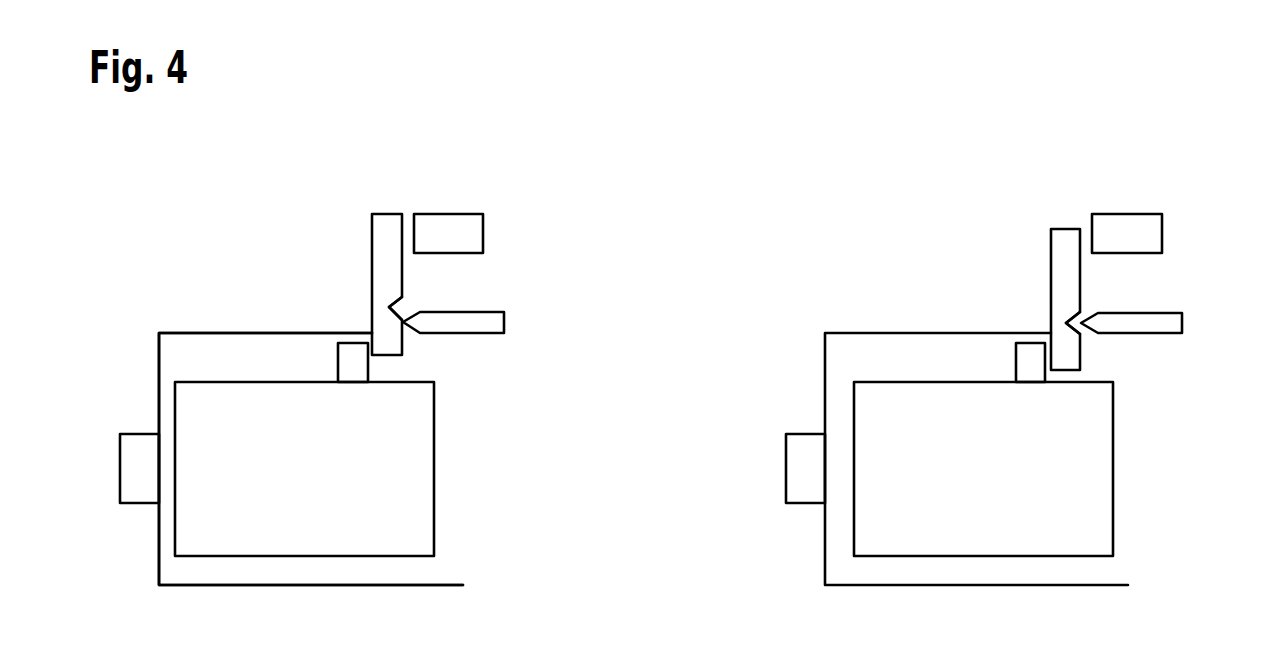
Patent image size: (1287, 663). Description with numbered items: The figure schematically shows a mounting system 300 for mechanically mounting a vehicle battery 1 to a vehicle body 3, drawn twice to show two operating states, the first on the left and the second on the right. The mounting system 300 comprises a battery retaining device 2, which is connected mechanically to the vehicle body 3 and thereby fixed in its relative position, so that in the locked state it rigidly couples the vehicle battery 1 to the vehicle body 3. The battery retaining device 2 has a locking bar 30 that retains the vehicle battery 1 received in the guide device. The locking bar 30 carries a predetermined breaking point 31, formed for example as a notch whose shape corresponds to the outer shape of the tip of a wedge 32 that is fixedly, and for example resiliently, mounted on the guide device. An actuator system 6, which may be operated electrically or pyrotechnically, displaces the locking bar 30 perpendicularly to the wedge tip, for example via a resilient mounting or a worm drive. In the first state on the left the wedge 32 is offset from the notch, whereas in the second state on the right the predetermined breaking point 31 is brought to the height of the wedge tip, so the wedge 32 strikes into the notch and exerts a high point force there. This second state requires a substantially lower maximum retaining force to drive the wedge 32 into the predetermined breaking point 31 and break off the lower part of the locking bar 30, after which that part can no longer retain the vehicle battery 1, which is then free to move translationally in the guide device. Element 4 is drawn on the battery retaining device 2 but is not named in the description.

The mounting system 300 is at (128, 293).
The vehicle battery 1 is at (195, 382).
The battery retaining device 2 is at (218, 333).
The vehicle body 3 is at (137, 434).
The contact element 4 is at (338, 358).
The locking bar 30 is at (372, 222).
The predetermined breaking point 31 is at (372, 301).
The wedge 32 is at (504, 323).
The actuator system 6 is at (483, 233).